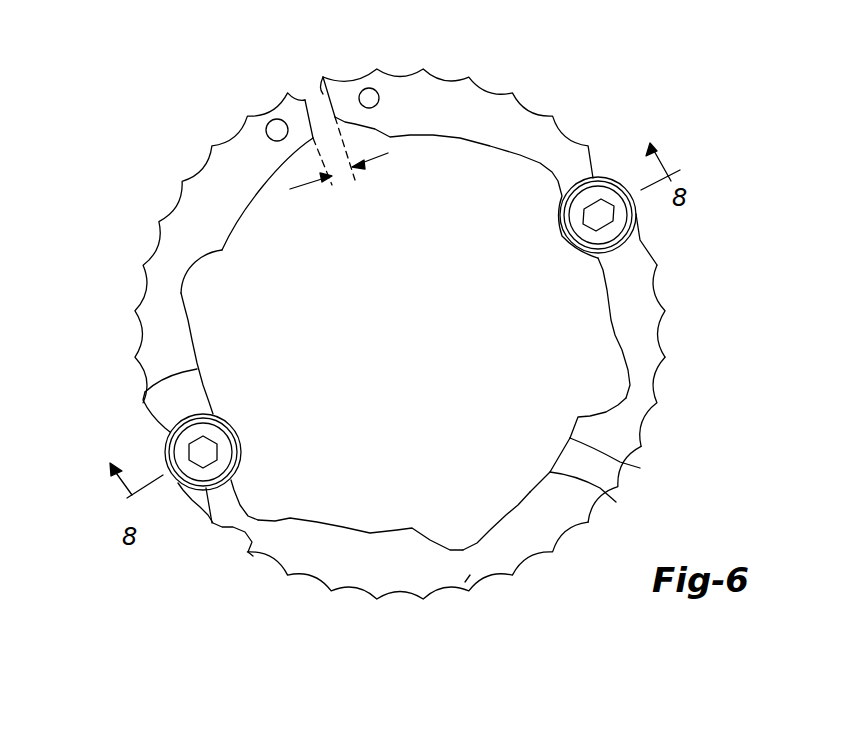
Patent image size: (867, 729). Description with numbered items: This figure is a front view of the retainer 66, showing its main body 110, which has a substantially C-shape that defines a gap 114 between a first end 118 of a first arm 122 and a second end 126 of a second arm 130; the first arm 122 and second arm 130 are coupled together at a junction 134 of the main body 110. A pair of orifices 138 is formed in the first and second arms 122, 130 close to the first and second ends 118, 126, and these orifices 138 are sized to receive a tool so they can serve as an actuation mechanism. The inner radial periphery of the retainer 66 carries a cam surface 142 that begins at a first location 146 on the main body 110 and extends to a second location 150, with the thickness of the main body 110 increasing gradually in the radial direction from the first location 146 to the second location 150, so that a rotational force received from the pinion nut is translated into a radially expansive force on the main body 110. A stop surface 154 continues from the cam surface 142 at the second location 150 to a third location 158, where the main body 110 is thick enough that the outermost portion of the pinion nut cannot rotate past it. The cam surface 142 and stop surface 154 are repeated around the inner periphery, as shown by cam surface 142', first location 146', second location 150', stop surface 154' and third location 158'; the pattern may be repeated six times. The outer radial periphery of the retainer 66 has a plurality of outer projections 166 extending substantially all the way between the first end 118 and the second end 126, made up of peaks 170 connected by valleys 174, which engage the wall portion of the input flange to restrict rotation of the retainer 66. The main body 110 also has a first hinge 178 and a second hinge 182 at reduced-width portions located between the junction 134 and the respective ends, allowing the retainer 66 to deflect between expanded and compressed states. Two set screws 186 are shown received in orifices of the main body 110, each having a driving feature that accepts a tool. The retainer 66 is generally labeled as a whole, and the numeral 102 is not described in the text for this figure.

The retainer 66 is at (553, 59).
The ring body 102 is at (327, 571).
The main body 110 is at (378, 583).
The gap 114 is at (388, 153).
The first end 118 is at (305, 99).
The second end 126 is at (322, 88).
The second arm 130 is at (478, 115).
The junction 134 is at (465, 582).
The orifices 138 is at (268, 133).
The first arm 122 is at (195, 207).
The cam surface 142 is at (165, 312).
The cam surface 142' is at (486, 569).
The first location 146 is at (140, 278).
The first location 146' is at (557, 513).
The second location 150 is at (218, 372).
The second location 150' is at (624, 496).
The stop surface 154 is at (231, 404).
The stop surface 154' is at (644, 462).
The third location 158 is at (252, 452).
The third location 158' is at (580, 398).
The outer projections 166 is at (666, 310).
The peaks 170 is at (665, 361).
The valleys 174 is at (665, 333).
The first hinge 178 is at (238, 553).
The second hinge 182 is at (645, 386).
The set screw 186 is at (216, 438).